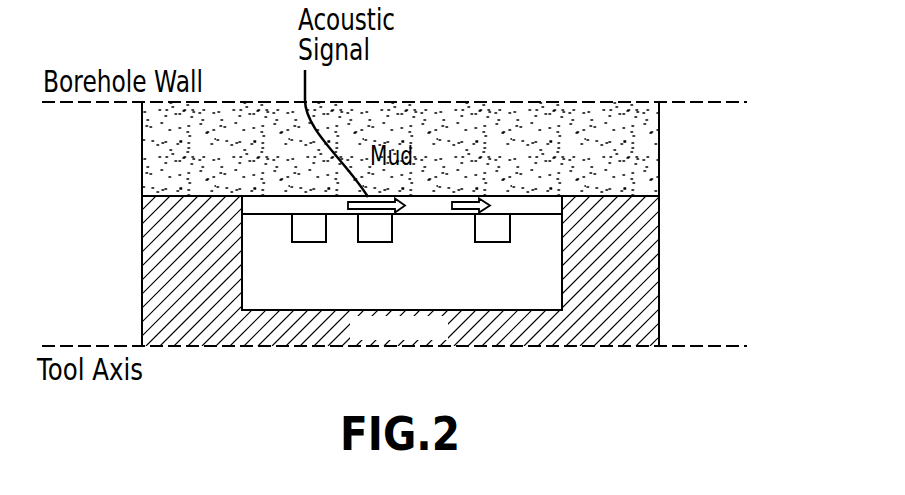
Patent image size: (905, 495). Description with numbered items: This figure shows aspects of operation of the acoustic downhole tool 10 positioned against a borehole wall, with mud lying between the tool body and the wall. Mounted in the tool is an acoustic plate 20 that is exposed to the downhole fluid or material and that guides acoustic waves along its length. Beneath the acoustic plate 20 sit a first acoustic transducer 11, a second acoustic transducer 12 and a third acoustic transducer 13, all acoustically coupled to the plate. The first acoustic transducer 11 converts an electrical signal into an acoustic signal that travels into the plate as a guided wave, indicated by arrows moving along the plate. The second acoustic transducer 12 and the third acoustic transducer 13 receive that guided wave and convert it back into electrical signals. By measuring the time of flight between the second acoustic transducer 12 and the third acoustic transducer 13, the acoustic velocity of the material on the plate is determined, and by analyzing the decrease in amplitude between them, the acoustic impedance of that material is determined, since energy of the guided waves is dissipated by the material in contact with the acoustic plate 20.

The acoustic downhole tool 10 is at (643, 247).
The acoustic plate 20 is at (265, 204).
The first acoustic transducer 11 is at (292, 231).
The second acoustic transducer 12 is at (390, 232).
The third acoustic transducer 13 is at (510, 229).